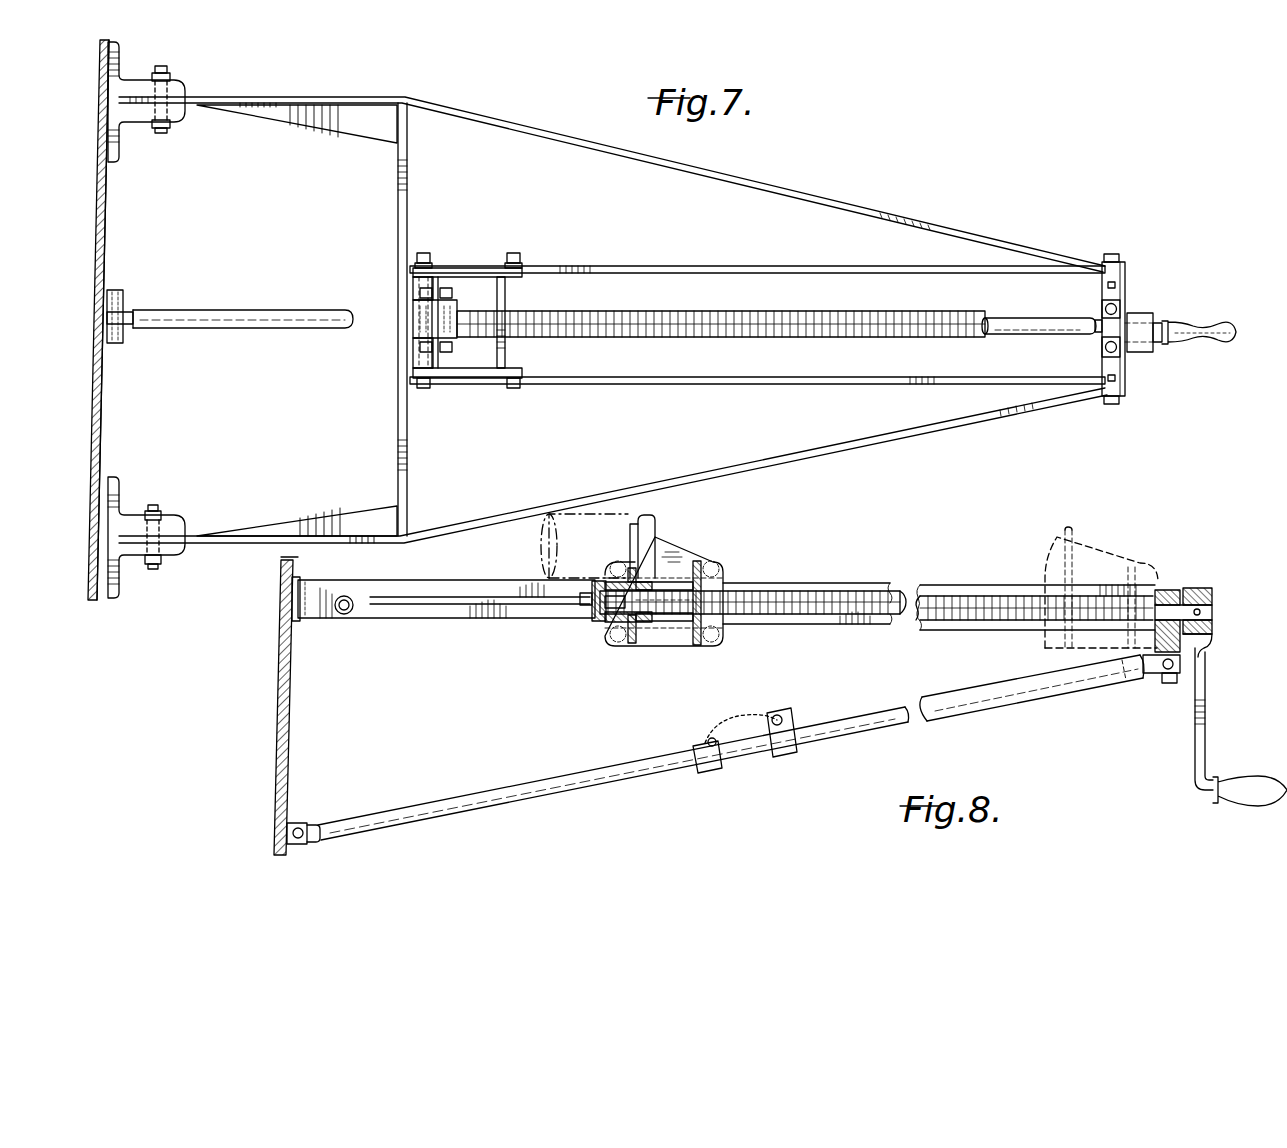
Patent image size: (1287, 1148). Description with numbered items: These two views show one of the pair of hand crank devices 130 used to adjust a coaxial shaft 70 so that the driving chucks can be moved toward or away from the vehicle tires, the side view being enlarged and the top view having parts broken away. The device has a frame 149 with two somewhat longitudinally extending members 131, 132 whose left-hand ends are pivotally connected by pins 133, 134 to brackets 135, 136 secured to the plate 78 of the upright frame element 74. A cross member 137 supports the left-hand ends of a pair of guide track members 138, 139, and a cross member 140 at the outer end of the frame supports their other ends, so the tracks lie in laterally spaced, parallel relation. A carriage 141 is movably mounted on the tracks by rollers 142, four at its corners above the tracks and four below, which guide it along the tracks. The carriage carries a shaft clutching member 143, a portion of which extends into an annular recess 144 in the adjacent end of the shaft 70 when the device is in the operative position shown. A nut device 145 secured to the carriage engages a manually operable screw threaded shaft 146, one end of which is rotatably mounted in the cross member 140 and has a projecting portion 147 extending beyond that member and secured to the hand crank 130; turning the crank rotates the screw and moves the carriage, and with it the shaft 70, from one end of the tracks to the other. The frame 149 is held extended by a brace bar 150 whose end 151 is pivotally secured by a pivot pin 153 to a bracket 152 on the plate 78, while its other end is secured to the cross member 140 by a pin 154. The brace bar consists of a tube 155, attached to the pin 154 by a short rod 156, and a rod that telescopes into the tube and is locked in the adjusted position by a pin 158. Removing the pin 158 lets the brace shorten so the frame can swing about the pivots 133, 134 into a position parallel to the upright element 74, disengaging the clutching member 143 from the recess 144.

In FIG. 8, the coaxial shaft 70 is at (588, 549).
In FIG. 7, the upright frame element 74 is at (106, 420).
In FIG. 7, the plate 78 is at (104, 372).
In FIG. 8, the plate 78 is at (290, 660).
In FIG. 7, the hand crank device 130 is at (1198, 318).
In FIG. 8, the hand crank device 130 is at (1208, 695).
In FIG. 7, the longitudinally extending frame member 131 is at (855, 448).
In FIG. 7, the longitudinally extending frame member 132 is at (755, 178).
In FIG. 8, the longitudinally extending frame member 132 is at (482, 622).
In FIG. 7, the pin 133 is at (158, 507).
In FIG. 7, the pin 134 is at (168, 132).
In FIG. 8, the pin 134 is at (348, 598).
In FIG. 7, the bracket 135 is at (118, 482).
In FIG. 7, the bracket 136 is at (122, 155).
In FIG. 8, the bracket 136 is at (355, 615).
In FIG. 7, the cross member 137 is at (395, 432).
In FIG. 8, the cross member 137 is at (590, 622).
In FIG. 7, the guide track member 138 is at (665, 385).
In FIG. 7, the guide track member 139 is at (655, 262).
In FIG. 8, the guide track member 139 is at (840, 627).
In FIG. 7, the cross member 140 is at (1125, 290).
In FIG. 8, the cross member 140 is at (1165, 590).
In FIG. 7, the carriage 141 is at (515, 305).
In FIG. 8, the carriage 141 is at (712, 558).
In FIG. 7, the rollers 142 is at (428, 254).
In FIG. 8, the rollers 142 is at (722, 570).
In FIG. 7, the shaft clutching member 143 is at (440, 285).
In FIG. 8, the shaft clutching member 143 is at (636, 575).
In FIG. 8, the annular recess 144 is at (640, 515).
In FIG. 7, the nut device 145 is at (457, 362).
In FIG. 8, the nut device 145 is at (645, 640).
In FIG. 7, the screw threaded shaft 146 is at (695, 311).
In FIG. 8, the screw threaded shaft 146 is at (818, 590).
In FIG. 7, the projecting portion 147 is at (1145, 352).
In FIG. 8, the projecting portion 147 is at (1205, 588).
In FIG. 7, the frame 149 is at (488, 110).
In FIG. 7, the brace bar 150 is at (240, 300).
In FIG. 8, the brace bar 150 is at (632, 780).
In FIG. 8, the end of brace bar 151 is at (322, 838).
In FIG. 7, the bracket 152 is at (118, 290).
In FIG. 8, the bracket 152 is at (292, 822).
In FIG. 8, the pivot pin 153 is at (305, 830).
In FIG. 8, the pin 154 is at (1175, 664).
In FIG. 7, the tube 155 is at (1042, 340).
In FIG. 8, the tube 155 is at (1025, 705).
In FIG. 7, the short rod 156 is at (1098, 318).
In FIG. 8, the short rod 156 is at (1165, 684).
In FIG. 8, the pin 158 is at (715, 755).